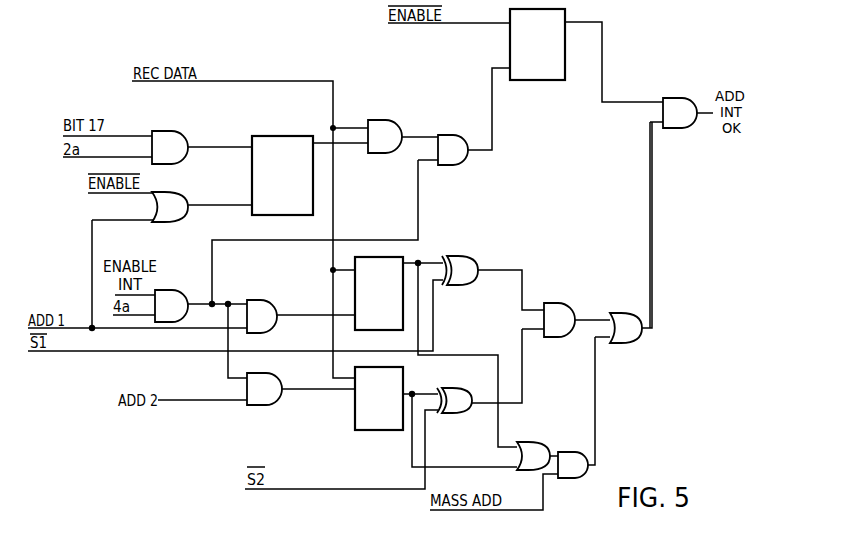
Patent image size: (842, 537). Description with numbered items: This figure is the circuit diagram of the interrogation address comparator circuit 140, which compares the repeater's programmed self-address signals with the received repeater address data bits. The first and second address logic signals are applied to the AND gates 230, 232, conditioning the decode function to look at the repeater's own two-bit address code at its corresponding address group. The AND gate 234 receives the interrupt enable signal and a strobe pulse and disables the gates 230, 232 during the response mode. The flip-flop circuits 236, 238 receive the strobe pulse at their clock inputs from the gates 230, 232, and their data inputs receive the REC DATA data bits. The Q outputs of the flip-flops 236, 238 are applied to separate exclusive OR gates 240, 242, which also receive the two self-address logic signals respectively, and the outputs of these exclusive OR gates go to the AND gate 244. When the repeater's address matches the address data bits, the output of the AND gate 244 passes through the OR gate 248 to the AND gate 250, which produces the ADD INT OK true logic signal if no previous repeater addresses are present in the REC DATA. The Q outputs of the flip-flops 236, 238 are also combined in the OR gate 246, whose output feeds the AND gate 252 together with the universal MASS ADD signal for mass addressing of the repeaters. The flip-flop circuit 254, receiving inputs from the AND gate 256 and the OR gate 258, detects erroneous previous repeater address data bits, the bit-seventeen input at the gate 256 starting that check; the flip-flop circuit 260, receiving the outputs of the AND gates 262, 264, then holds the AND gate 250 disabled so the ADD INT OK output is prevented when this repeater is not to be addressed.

The interrogation address comparator circuit 140 is at (330, 528).
The AND gate 230 is at (267, 300).
The AND gate 232 is at (272, 404).
The AND gate 234 is at (168, 290).
The flip-flop circuit 236 is at (403, 261).
The flip-flop circuit 238 is at (403, 373).
The exclusive OR gate 240 is at (472, 258).
The exclusive OR gate 242 is at (450, 414).
The AND gate 244 is at (556, 303).
The OR gate 246 is at (537, 443).
The OR gate 248 is at (636, 342).
The AND gate 250 is at (672, 128).
The AND gate 252 is at (584, 478).
The flip-flop circuit 254 is at (262, 136).
The AND gate 256 is at (168, 131).
The OR gate 258 is at (189, 183).
The flip-flop circuit 260 is at (535, 80).
The AND gate 262 is at (378, 120).
The AND gate 264 is at (462, 163).